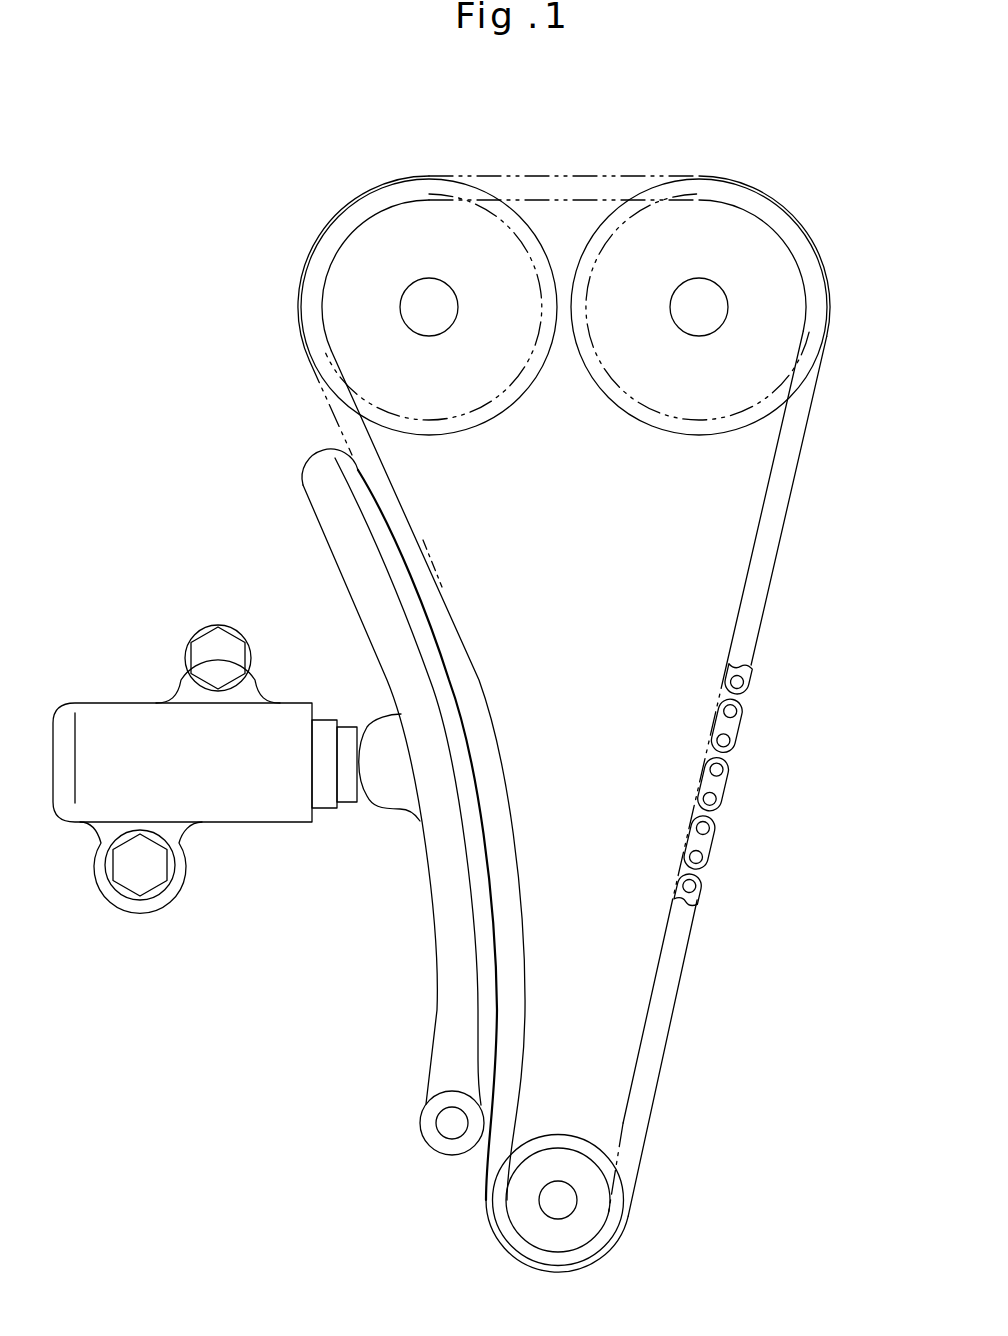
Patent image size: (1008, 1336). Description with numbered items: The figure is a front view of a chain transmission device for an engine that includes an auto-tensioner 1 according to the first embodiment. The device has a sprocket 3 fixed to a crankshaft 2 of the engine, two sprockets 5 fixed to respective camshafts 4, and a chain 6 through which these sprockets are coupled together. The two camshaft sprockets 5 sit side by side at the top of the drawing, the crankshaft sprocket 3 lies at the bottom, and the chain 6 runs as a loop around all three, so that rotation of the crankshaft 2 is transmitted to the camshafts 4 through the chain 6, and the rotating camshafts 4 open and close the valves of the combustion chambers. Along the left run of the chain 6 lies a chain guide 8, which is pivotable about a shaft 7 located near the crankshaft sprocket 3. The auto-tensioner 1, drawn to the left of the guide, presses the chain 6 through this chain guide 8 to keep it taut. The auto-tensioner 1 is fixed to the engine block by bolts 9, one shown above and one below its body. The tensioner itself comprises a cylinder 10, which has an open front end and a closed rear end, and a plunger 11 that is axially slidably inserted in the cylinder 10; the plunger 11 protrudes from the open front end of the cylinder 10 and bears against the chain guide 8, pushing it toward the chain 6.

The auto-tensioner 1 is at (205, 756).
The crankshaft 2 is at (552, 1197).
The sprocket 3 is at (540, 1228).
The camshaft 4 is at (417, 297).
The sprocket 5 is at (418, 217).
The chain 6 is at (730, 782).
The shaft 7 is at (453, 1123).
The chain guide 8 is at (306, 470).
The bolt 9 is at (203, 645).
The cylinder 10 is at (247, 807).
The plunger 11 is at (323, 798).